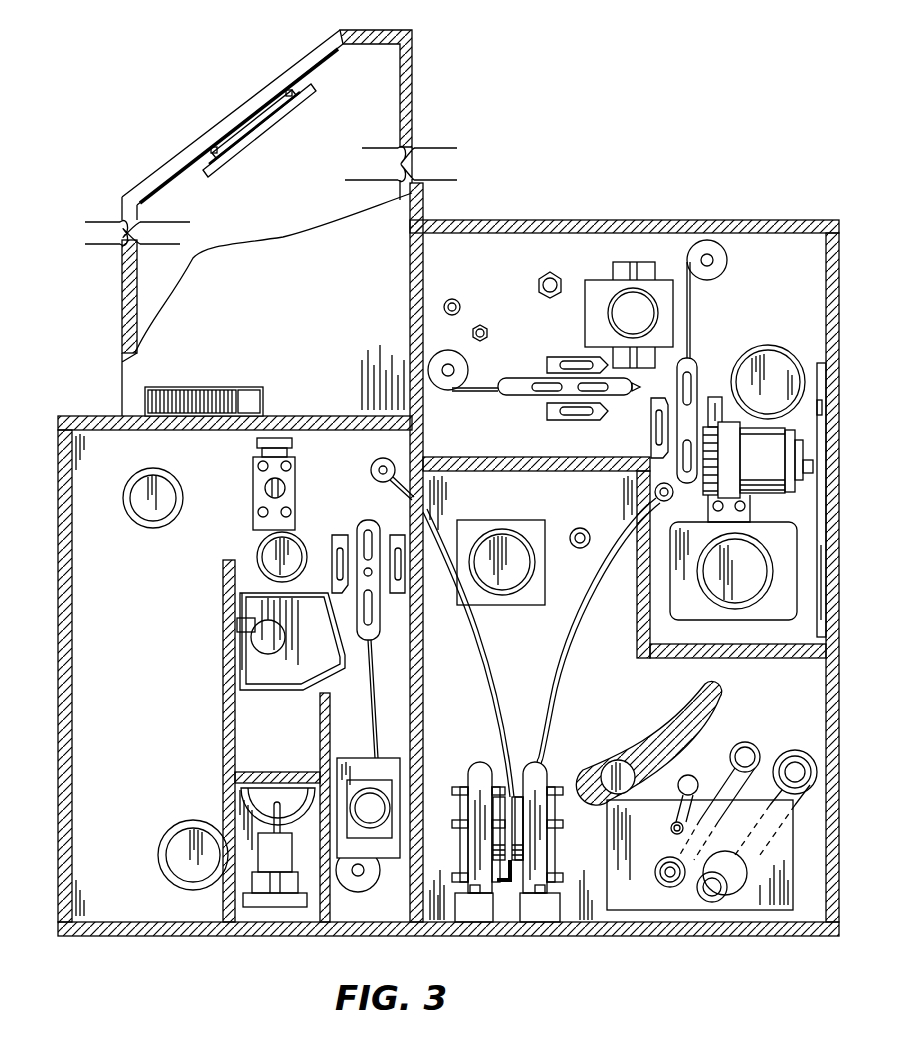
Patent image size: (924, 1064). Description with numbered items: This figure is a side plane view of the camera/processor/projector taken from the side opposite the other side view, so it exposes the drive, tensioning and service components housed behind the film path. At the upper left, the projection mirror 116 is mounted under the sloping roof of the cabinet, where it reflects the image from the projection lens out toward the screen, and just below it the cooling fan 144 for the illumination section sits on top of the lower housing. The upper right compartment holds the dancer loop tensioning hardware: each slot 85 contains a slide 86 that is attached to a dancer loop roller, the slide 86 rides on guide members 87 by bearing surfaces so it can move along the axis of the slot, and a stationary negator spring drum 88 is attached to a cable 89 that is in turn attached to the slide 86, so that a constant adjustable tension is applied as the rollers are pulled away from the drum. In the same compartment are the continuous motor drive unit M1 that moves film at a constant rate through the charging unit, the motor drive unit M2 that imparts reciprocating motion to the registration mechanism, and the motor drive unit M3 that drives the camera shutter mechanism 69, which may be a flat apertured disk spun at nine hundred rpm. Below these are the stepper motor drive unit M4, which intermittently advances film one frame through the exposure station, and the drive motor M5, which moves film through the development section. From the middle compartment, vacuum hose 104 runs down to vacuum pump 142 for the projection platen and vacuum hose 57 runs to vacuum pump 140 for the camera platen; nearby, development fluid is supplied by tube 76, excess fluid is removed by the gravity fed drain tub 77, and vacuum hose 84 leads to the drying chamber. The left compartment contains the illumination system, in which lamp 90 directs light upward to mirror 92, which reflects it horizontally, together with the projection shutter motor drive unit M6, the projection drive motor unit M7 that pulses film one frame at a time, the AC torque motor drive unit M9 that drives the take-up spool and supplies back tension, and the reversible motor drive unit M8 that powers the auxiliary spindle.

The projection mirror 116 is at (295, 106).
The cooling fan 144 is at (225, 387).
The continuous motor drive unit M1 is at (623, 300).
The negator spring drum 88 is at (727, 262).
The cable 89 is at (692, 318).
The slide 86 is at (520, 395).
The guide members 87 is at (552, 357).
The slot 85 is at (699, 360).
The motor drive unit M2 is at (775, 372).
The motor drive unit M3 is at (768, 458).
The camera shutter mechanism 69 is at (820, 503).
The stepper motor drive unit M4 is at (757, 565).
The drive motor M5 is at (512, 552).
The vacuum hose 104 is at (500, 662).
The vacuum hose 57 is at (566, 650).
The vacuum pump 142 is at (472, 762).
The vacuum pump 140 is at (557, 766).
The drain tub 77 is at (698, 792).
The tube 76 is at (742, 752).
The vacuum hose 84 is at (778, 766).
The projection drive motor unit M7 is at (152, 510).
The motor drive unit M6 is at (270, 560).
The mirror 92 is at (270, 695).
The lamp 90 is at (260, 808).
The torque motor drive unit M9 is at (178, 867).
The motor drive unit M8 is at (367, 794).